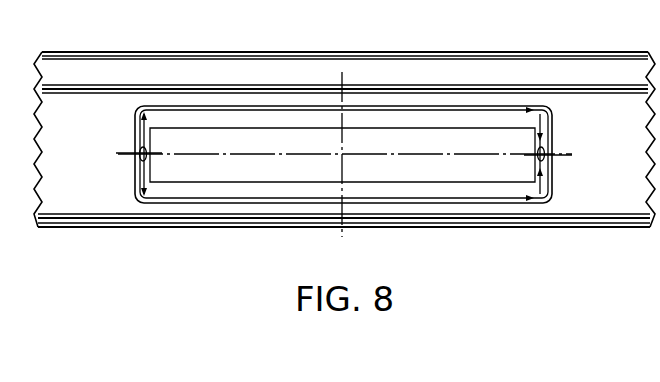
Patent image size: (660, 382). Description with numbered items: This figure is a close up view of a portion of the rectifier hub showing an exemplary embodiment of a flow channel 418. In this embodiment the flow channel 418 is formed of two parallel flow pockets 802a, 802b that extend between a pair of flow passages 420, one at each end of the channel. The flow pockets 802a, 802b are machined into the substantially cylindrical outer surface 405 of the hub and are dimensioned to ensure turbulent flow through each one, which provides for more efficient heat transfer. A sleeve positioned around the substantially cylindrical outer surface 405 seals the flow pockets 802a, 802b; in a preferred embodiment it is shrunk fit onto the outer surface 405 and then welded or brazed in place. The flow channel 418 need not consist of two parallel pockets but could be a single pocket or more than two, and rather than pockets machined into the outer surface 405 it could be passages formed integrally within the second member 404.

The second member 404 is at (344, 123).
The substantially cylindrical outer surface 405 is at (121, 128).
The flow channel 418 is at (426, 102).
The flow passage 420 is at (136, 156).
The flow pocket 802a is at (263, 118).
The flow pocket 802b is at (266, 192).